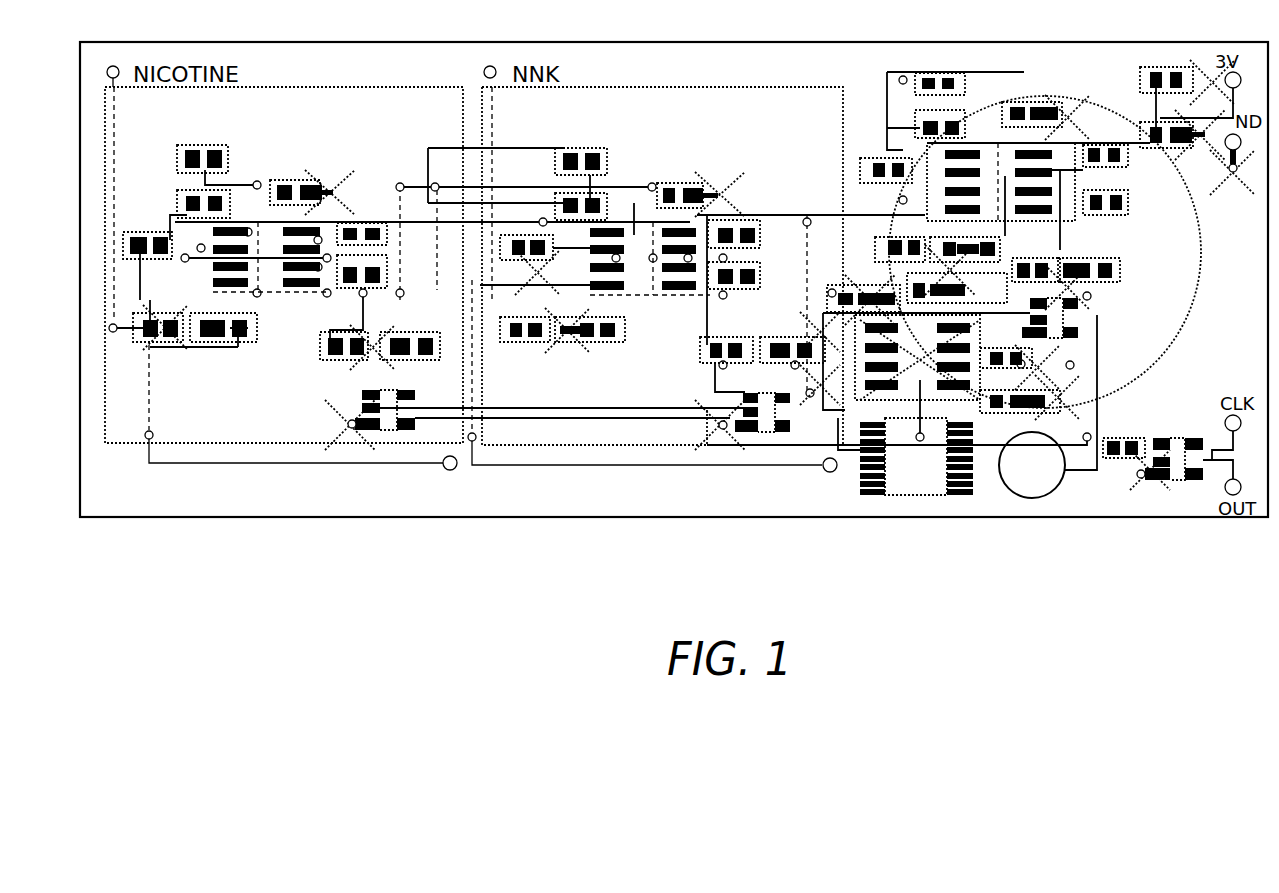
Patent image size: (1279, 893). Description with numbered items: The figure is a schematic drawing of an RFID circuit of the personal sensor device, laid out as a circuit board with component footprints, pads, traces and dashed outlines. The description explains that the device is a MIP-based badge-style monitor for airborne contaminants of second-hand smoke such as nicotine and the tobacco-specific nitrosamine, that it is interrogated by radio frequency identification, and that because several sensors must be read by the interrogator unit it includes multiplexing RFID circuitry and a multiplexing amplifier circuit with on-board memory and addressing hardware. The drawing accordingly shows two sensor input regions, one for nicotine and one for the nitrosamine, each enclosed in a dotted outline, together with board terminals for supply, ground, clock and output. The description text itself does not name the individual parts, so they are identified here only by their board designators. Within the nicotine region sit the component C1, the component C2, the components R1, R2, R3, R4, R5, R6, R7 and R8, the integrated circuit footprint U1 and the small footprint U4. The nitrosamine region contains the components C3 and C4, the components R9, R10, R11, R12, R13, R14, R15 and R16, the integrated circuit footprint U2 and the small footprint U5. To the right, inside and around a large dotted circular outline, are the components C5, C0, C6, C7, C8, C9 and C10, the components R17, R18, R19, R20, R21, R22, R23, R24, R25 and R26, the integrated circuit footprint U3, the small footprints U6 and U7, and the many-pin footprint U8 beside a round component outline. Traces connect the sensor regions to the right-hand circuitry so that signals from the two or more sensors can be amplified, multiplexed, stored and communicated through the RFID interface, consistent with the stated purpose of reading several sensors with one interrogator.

The capacitor C1 is at (202, 150).
The capacitor C2 is at (301, 183).
The capacitor C3 is at (581, 151).
The capacitor C4 is at (685, 186).
The capacitor C5 is at (938, 73).
The capacitor C0 is at (954, 87).
The capacitor C6 is at (1032, 104).
The capacitor C7 is at (1019, 392).
The capacitor C8 is at (1164, 72).
The capacitor C9 is at (1170, 128).
The capacitor C10 is at (863, 288).
The resistor R1 is at (203, 198).
The resistor R2 is at (362, 223).
The resistor R3 is at (146, 238).
The resistor R4 is at (341, 339).
The resistor R5 is at (410, 339).
The resistor R6 is at (158, 320).
The resistor R7 is at (223, 320).
The resistor R8 is at (367, 268).
The resistor R9 is at (581, 199).
The resistor R10 is at (788, 209).
The resistor R11 is at (526, 259).
The resistor R12 is at (726, 345).
The resistor R13 is at (792, 345).
The resistor R14 is at (525, 320).
The resistor R15 is at (590, 320).
The resistor R16 is at (744, 254).
The resistor R17 is at (939, 119).
The resistor R18 is at (1105, 146).
The resistor R19 is at (879, 161).
The resistor R20 is at (1036, 257).
The resistor R21 is at (1092, 257).
The resistor R22 is at (889, 238).
The resistor R23 is at (965, 238).
The resistor R24 is at (1105, 193).
The resistor R25 is at (1121, 438).
The resistor R26 is at (1006, 346).
The integrated circuit U1 is at (271, 247).
The integrated circuit U2 is at (650, 248).
The integrated circuit U3 is at (1001, 173).
The integrated circuit U4 is at (381, 402).
The integrated circuit U5 is at (754, 402).
The integrated circuit U6 is at (1050, 311).
The integrated circuit U7 is at (1170, 452).
The integrated circuit U8 is at (916, 451).